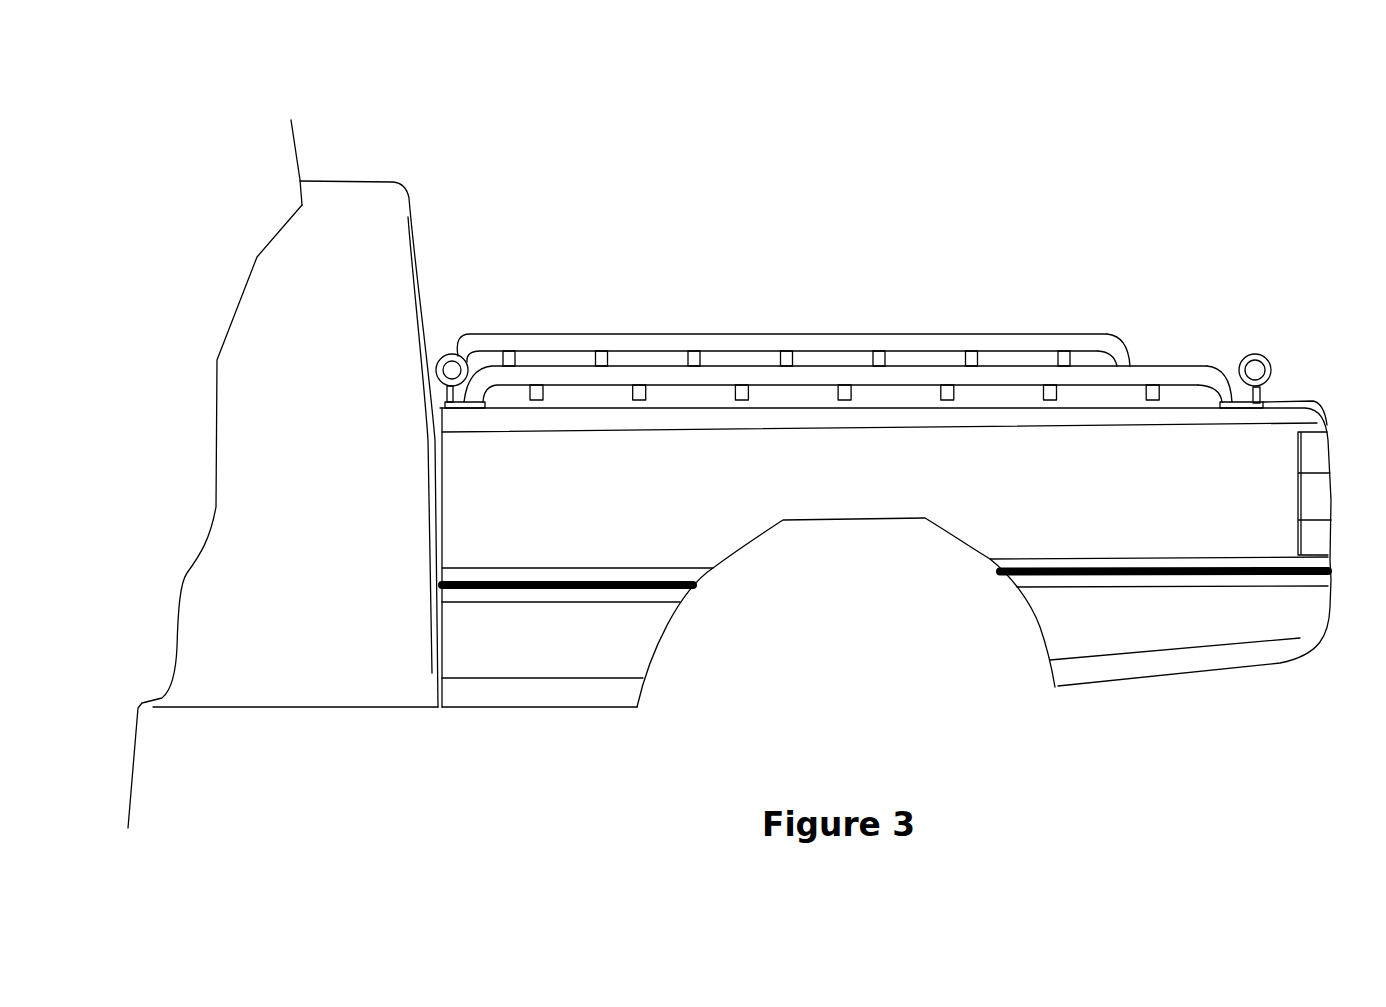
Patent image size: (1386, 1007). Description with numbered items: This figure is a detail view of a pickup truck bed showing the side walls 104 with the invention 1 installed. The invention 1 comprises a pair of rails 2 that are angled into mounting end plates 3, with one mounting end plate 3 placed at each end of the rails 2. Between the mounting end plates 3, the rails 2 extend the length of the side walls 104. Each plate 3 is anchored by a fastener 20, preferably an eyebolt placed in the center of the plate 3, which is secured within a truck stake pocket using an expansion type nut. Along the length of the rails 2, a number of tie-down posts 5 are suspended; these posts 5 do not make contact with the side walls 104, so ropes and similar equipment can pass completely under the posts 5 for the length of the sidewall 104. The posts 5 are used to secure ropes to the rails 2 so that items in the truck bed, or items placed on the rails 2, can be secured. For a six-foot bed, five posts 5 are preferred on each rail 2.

The invention 1 is at (870, 335).
The rails 2 is at (938, 319).
The mounting end plate 3 is at (1230, 400).
The tie-down posts 5 is at (1040, 393).
The fastener 20 is at (1263, 347).
The side walls 104 is at (1115, 423).